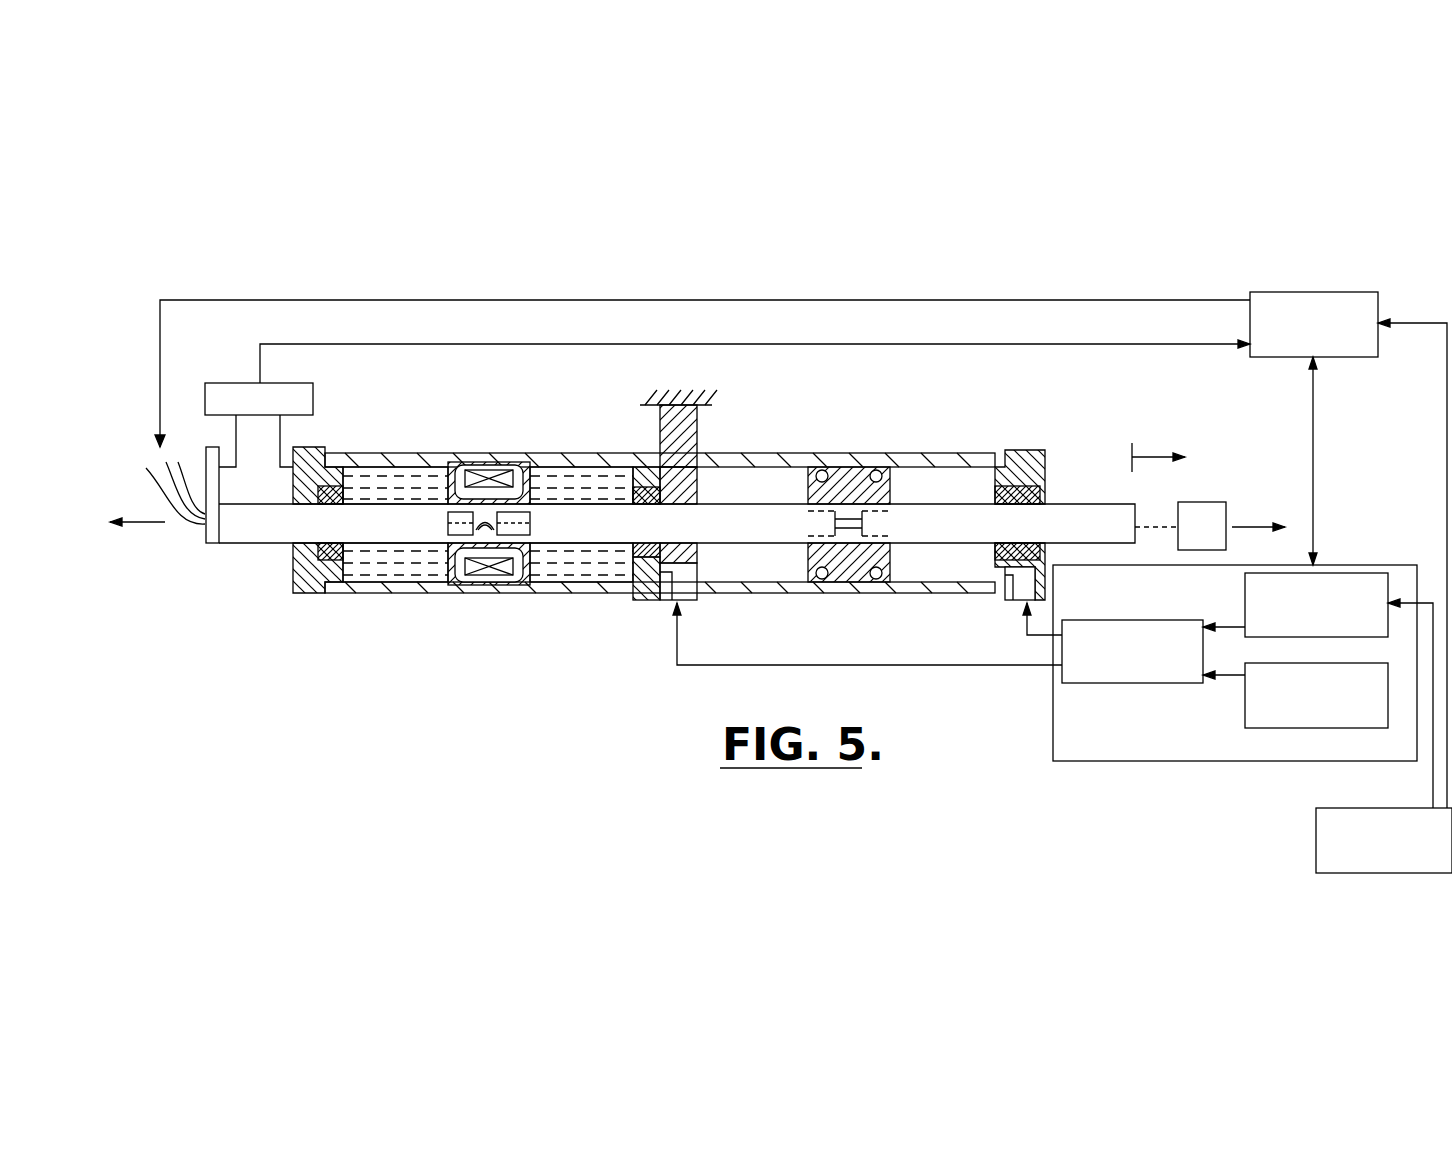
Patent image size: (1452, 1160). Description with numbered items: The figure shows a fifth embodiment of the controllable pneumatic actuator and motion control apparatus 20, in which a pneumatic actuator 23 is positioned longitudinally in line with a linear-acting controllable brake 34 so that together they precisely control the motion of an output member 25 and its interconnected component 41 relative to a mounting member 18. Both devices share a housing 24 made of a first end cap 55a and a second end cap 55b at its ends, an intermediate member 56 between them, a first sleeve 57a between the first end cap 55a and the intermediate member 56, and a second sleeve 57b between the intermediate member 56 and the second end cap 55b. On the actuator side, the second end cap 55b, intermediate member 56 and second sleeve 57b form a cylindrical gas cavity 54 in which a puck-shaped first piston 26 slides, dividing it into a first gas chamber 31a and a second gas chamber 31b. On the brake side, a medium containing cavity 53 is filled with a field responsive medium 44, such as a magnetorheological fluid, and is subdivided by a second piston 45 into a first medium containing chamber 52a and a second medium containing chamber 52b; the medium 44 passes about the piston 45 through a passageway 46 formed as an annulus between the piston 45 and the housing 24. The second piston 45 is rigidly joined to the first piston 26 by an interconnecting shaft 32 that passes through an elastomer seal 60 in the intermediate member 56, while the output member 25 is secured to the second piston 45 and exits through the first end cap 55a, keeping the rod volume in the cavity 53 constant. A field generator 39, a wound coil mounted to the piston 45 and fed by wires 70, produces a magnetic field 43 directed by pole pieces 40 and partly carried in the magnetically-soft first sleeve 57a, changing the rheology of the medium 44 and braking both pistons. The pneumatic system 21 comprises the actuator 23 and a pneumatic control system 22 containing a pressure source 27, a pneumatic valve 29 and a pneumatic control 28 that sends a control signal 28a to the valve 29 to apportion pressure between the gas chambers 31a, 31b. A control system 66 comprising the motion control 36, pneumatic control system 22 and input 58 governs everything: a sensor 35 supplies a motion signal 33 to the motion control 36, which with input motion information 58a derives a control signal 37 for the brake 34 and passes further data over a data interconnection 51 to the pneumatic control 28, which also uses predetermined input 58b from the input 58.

The controllable pneumatic actuator and motion control apparatus 20 is at (805, 278).
The control system 66 is at (1222, 278).
The control signal 37 is at (1190, 300).
The motion control 36 is at (1330, 292).
The input motion information 58a is at (1425, 320).
The predetermined input 58b is at (1430, 795).
The input 58 is at (1316, 836).
The motion signal 33 is at (1175, 344).
The data interconnection 51 is at (1313, 460).
The pneumatic control system 22 is at (1197, 762).
The pneumatic control 28 is at (1245, 592).
The control signal 28a is at (1226, 623).
The pneumatic valve 29 is at (1150, 683).
The pressure source 27 is at (1243, 710).
The pneumatic system 21 is at (1037, 672).
The output member 25 is at (256, 528).
The interconnecting shaft 32 is at (567, 532).
The sensor 35 is at (313, 405).
The wires 70 is at (196, 520).
The housing 24 is at (778, 592).
The pneumatic actuator 23 is at (822, 455).
The first sleeve 57a is at (589, 588).
The second sleeve 57b is at (931, 590).
The first end cap 55a is at (305, 596).
The second end cap 55b is at (1040, 450).
The gas cavity 54 is at (967, 470).
The mounting member 18 is at (688, 434).
The elastomer seal 60 is at (654, 566).
The intermediate member 56 is at (661, 582).
The first piston 26 is at (853, 458).
The first gas chamber 31a is at (732, 499).
The second gas chamber 31b is at (922, 499).
The controllable linear-acting brake 34 is at (458, 440).
The first medium containing chamber 52a is at (417, 473).
The medium containing cavity 53 is at (370, 480).
The field responsive medium 44 is at (383, 567).
The second medium containing chamber 52b is at (583, 470).
The magnetic field 43 is at (523, 448).
The field generator 39 is at (495, 473).
The passageway 46 is at (480, 595).
The second piston 45 is at (493, 600).
The pole pieces 40 is at (458, 570).
The interconnected component 41 is at (1205, 502).